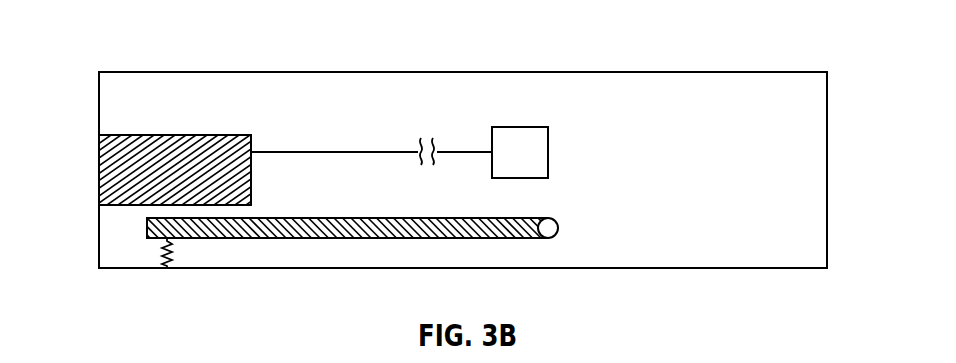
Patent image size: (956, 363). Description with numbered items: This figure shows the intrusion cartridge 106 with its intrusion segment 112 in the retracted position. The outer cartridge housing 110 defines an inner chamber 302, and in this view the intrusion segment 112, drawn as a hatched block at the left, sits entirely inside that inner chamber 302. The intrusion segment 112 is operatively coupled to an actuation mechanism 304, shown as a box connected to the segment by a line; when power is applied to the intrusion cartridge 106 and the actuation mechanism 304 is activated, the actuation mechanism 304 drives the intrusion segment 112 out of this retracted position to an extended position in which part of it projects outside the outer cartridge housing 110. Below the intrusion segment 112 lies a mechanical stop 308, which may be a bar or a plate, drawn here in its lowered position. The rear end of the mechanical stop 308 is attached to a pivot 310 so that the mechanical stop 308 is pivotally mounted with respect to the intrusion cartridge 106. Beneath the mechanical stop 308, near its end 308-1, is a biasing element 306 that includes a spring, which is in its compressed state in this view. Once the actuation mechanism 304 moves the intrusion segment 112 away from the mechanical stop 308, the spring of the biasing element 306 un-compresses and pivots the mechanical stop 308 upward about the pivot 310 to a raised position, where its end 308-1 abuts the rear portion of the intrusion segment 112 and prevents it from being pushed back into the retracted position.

The intrusion cartridge 106 is at (790, 60).
The outer cartridge housing 110 is at (827, 170).
The intrusion segment 112 is at (172, 134).
The inner chamber 302 is at (461, 83).
The actuation mechanism 304 is at (548, 152).
The biasing element 306 is at (171, 249).
The mechanical stop 308 is at (338, 216).
The end of the mechanical stop 308-1 is at (146, 228).
The pivot 310 is at (557, 224).